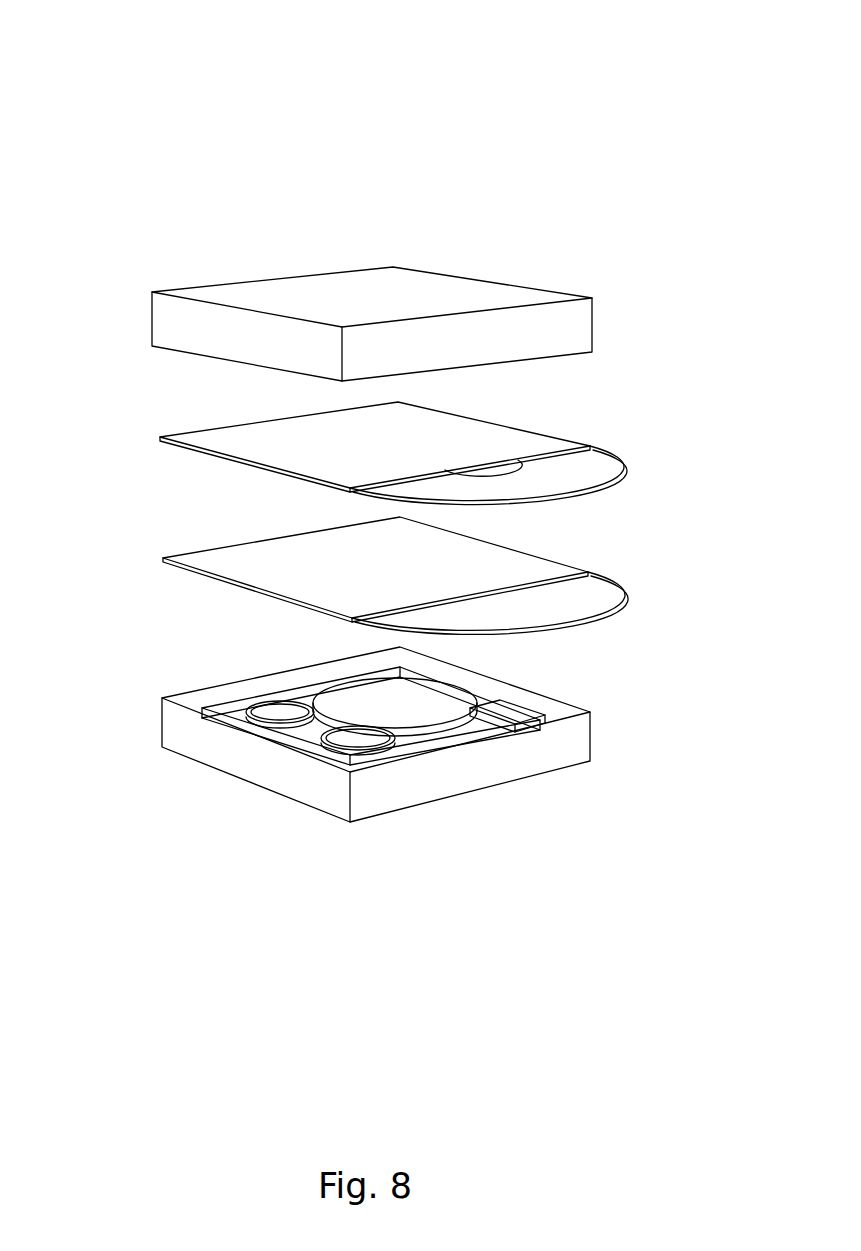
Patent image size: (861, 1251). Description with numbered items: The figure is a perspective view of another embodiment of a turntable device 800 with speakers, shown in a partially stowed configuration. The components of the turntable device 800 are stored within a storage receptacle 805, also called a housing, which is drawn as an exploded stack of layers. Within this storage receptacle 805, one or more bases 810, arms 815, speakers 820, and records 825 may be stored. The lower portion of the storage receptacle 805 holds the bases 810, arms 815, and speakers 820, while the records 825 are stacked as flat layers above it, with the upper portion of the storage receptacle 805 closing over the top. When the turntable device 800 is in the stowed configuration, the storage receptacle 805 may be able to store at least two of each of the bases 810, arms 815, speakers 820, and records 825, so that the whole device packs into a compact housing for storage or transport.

The turntable device 800 is at (155, 180).
The storage receptacle 805 is at (420, 293).
The base 810 is at (430, 715).
The arm 815 is at (502, 715).
The speaker 820 is at (298, 735).
The record 825 is at (487, 438).